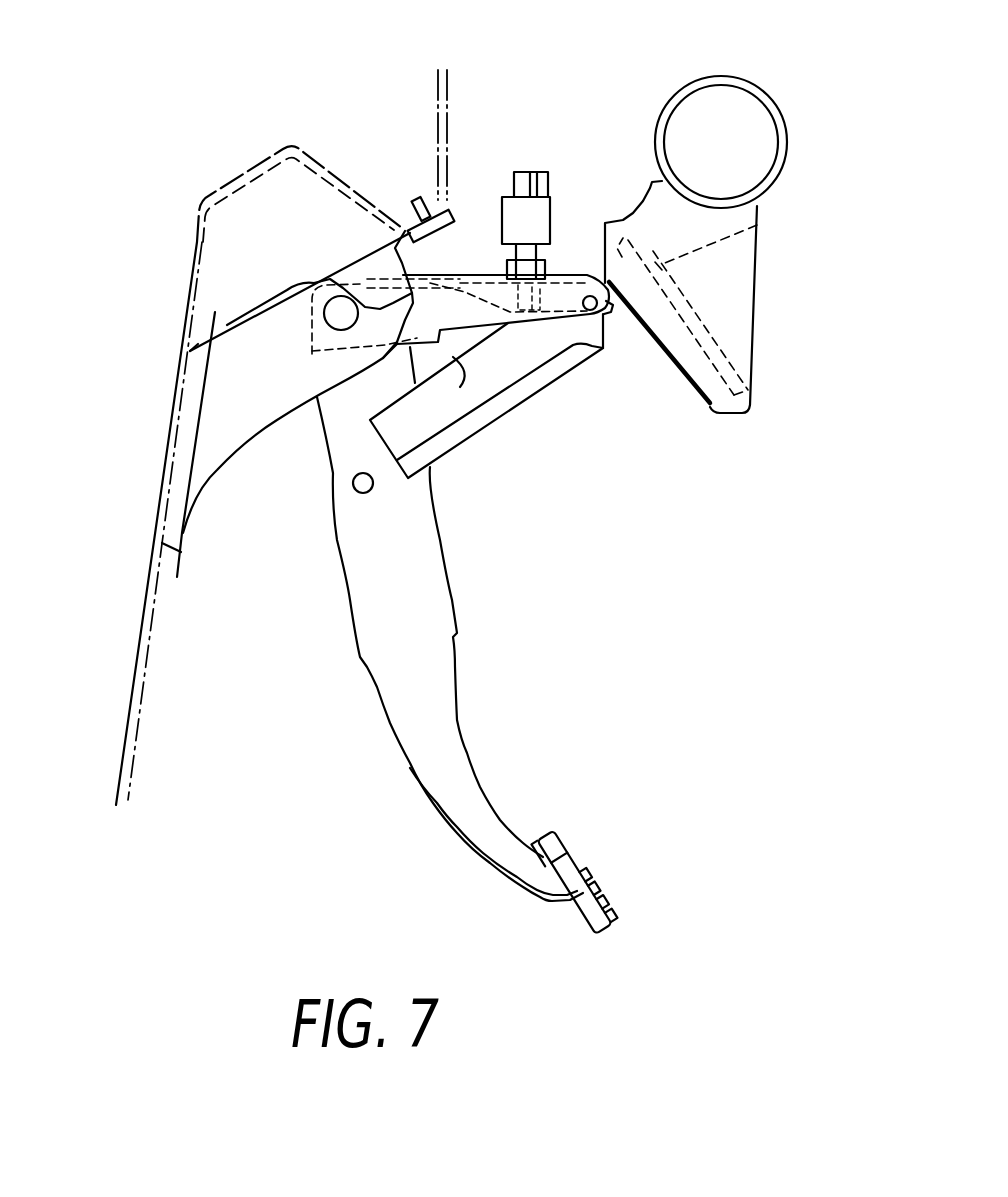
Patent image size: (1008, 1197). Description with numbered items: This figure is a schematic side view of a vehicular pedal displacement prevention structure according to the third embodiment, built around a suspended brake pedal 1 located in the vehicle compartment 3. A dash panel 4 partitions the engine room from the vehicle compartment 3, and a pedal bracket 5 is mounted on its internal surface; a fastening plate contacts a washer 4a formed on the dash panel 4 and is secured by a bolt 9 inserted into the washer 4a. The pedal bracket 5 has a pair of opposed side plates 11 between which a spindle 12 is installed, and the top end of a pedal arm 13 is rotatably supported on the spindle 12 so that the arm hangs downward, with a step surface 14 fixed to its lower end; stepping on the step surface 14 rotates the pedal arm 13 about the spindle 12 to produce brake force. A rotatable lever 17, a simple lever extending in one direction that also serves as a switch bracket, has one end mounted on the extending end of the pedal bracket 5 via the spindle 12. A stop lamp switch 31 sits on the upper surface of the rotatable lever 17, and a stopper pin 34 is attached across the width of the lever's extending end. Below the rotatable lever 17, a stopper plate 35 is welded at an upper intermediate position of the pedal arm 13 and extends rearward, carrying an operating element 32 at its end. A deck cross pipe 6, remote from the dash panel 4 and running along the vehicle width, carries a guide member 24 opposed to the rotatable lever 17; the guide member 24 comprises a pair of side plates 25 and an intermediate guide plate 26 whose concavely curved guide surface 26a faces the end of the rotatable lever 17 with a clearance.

The brake pedal 1 is at (483, 521).
The vehicle compartment 3 is at (272, 759).
The dash panel 4 is at (142, 627).
The washer 4a is at (450, 88).
The pedal bracket 5 is at (225, 445).
The deck cross pipe 6 is at (790, 153).
The bolt 9 is at (417, 200).
The side plates 11 is at (272, 312).
The spindle 12 is at (332, 321).
The pedal arm 13 is at (455, 615).
The step surface 14 is at (563, 838).
The rotatable lever 17 is at (470, 314).
The guide member 24 is at (731, 322).
The side plates 25 is at (740, 320).
The guide plate 26 is at (758, 224).
The guide surface 26a is at (687, 373).
The stop lamp switch 31 is at (503, 205).
The operating element 32 is at (470, 282).
The stopper pin 34 is at (590, 295).
The stopper plate 35 is at (490, 390).